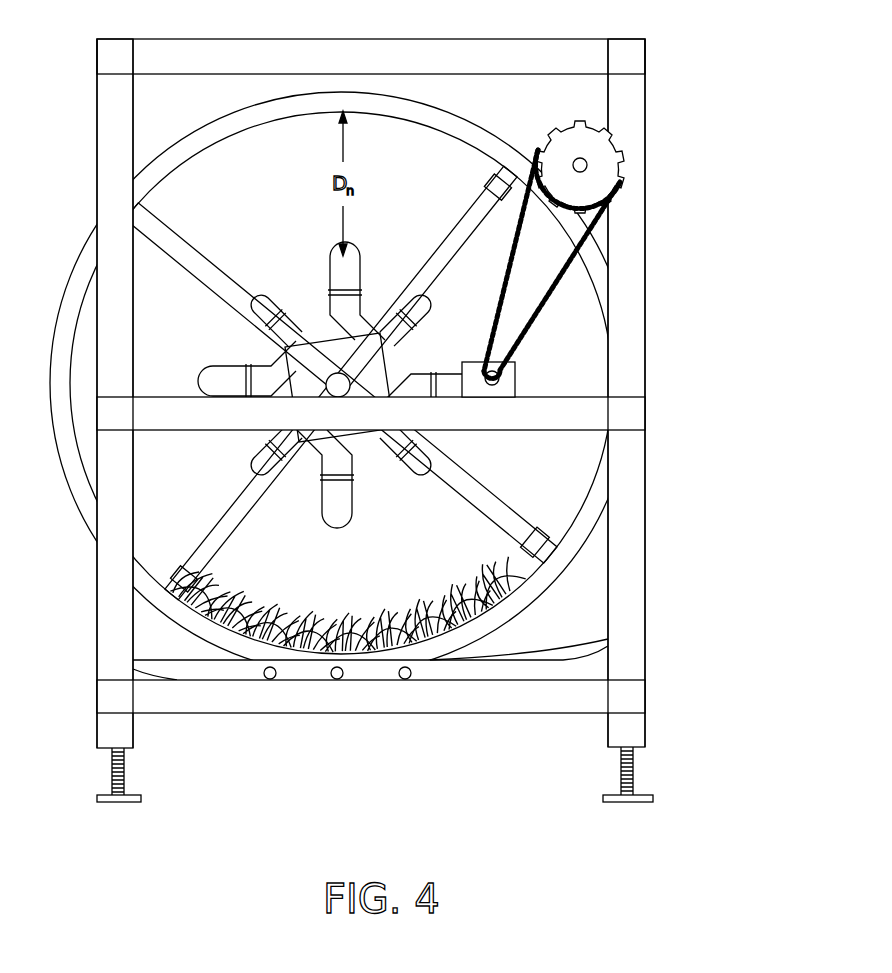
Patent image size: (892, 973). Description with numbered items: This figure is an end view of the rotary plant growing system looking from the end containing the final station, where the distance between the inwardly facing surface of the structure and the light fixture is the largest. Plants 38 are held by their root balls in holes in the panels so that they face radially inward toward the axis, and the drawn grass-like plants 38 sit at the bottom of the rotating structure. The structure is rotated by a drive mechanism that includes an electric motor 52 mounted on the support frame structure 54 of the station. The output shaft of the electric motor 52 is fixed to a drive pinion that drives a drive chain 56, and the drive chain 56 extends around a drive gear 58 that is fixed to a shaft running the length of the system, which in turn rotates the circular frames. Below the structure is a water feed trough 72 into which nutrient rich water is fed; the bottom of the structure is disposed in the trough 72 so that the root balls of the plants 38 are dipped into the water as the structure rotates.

The plants 38 is at (272, 594).
The electric motor 52 is at (506, 381).
The support frame structure 54 is at (646, 237).
The drive chain 56 is at (530, 326).
The drive gear 58 is at (597, 153).
The water feed trough 72 is at (508, 667).